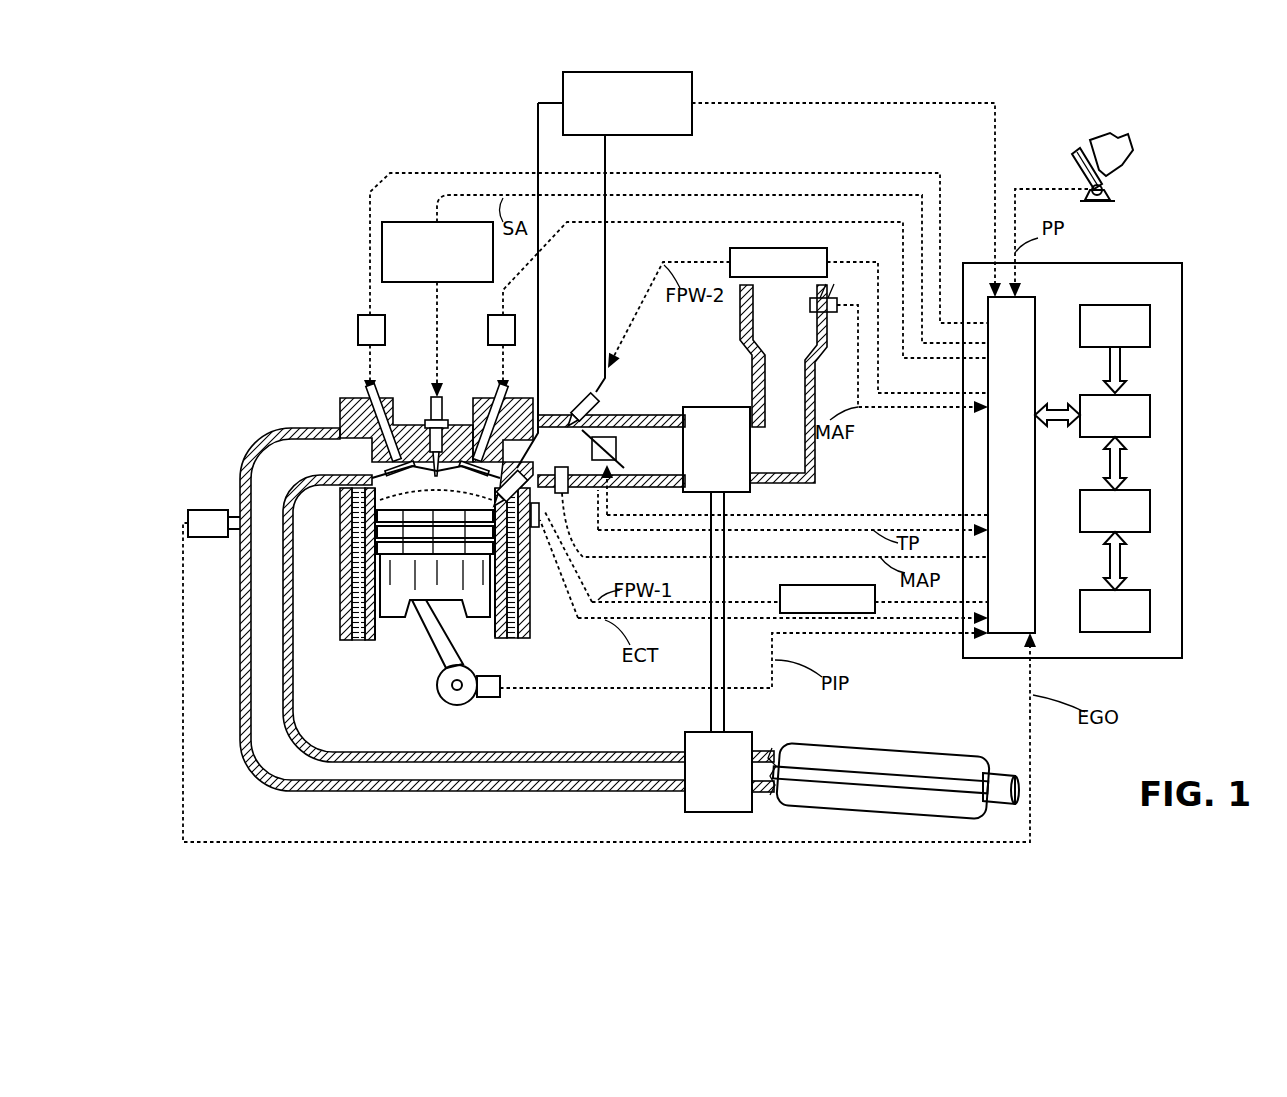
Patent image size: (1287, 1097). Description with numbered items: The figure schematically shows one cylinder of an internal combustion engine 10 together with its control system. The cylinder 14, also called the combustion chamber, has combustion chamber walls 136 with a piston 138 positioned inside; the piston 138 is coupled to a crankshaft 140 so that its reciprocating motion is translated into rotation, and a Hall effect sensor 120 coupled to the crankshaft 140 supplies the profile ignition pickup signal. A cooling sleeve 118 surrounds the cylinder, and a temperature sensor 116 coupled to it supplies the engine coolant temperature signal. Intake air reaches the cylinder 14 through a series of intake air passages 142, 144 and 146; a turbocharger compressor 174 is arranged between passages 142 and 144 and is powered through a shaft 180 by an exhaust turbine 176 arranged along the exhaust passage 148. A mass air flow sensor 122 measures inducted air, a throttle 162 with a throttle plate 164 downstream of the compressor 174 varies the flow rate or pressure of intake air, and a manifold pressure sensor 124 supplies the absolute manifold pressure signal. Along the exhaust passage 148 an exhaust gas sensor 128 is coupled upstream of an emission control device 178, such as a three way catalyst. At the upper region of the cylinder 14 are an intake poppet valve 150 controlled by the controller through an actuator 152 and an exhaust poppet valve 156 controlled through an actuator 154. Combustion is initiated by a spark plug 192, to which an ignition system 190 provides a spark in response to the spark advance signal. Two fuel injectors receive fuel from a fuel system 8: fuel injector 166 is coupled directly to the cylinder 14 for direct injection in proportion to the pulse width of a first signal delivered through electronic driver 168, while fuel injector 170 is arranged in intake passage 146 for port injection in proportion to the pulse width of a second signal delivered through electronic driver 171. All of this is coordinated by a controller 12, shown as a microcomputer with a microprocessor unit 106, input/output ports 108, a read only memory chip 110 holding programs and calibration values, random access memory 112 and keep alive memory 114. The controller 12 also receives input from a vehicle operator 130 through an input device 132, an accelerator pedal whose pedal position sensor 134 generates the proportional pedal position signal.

The fuel system 8 is at (661, 72).
The internal combustion engine 10 is at (268, 350).
The controller 12 is at (1182, 265).
The cylinder 14 is at (343, 510).
The microprocessor unit 106 is at (1152, 414).
The input/output ports 108 is at (1037, 300).
The read only memory chip 110 is at (1152, 325).
The random access memory 112 is at (1152, 515).
The keep alive memory 114 is at (1152, 615).
The temperature sensor 116 is at (542, 530).
The cooling sleeve 118 is at (530, 615).
The Hall effect sensor 120 is at (495, 700).
The mass air flow sensor 122 is at (840, 285).
The manifold pressure sensor 124 is at (575, 505).
The exhaust gas sensor 128 is at (188, 516).
The vehicle operator 130 is at (1128, 152).
The input device 132 is at (1080, 158).
The pedal position sensor 134 is at (1105, 190).
The combustion chamber walls 136 is at (380, 625).
The piston 138 is at (420, 590).
The crankshaft 140 is at (443, 700).
The intake air passage 142 is at (768, 333).
The intake air passage 144 is at (638, 458).
The intake air passage 146 is at (540, 458).
The exhaust passage 148 is at (295, 471).
The intake poppet valve 150 is at (468, 405).
The actuator 152 is at (487, 330).
The actuator 154 is at (357, 332).
The exhaust poppet valve 156 is at (345, 428).
The throttle 162 is at (605, 432).
The throttle plate 164 is at (576, 426).
The fuel injector 166 is at (490, 476).
The electronic driver 168 is at (782, 588).
The fuel injector 170 is at (583, 396).
The electronic driver 171 is at (733, 250).
The compressor 174 is at (702, 407).
The exhaust turbine 176 is at (683, 805).
The emission control device 178 is at (947, 750).
The shaft 180 is at (725, 695).
The ignition system 190 is at (395, 222).
The spark plug 192 is at (428, 410).